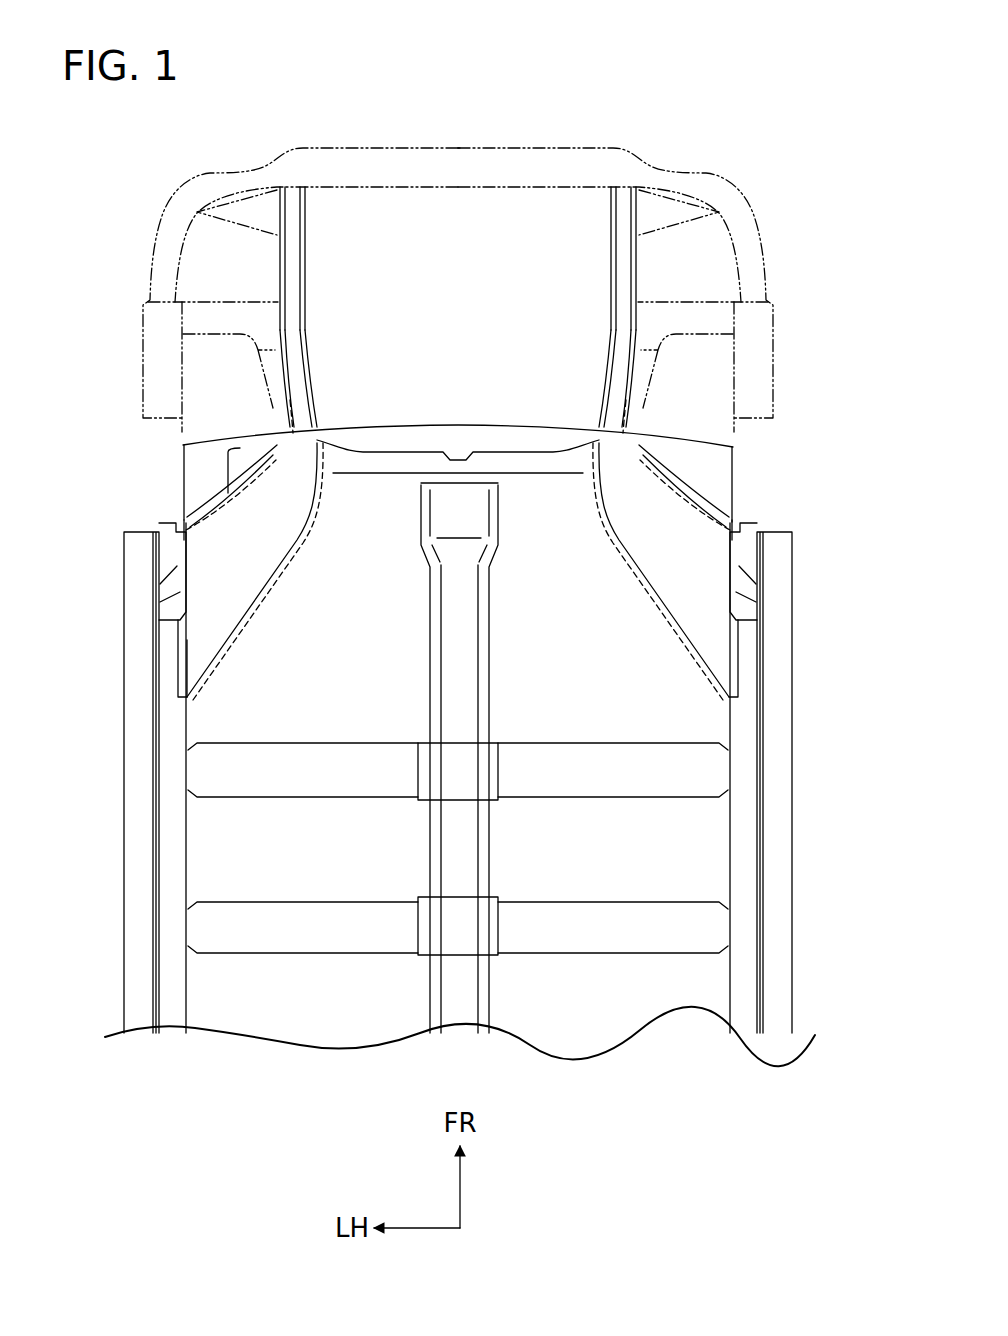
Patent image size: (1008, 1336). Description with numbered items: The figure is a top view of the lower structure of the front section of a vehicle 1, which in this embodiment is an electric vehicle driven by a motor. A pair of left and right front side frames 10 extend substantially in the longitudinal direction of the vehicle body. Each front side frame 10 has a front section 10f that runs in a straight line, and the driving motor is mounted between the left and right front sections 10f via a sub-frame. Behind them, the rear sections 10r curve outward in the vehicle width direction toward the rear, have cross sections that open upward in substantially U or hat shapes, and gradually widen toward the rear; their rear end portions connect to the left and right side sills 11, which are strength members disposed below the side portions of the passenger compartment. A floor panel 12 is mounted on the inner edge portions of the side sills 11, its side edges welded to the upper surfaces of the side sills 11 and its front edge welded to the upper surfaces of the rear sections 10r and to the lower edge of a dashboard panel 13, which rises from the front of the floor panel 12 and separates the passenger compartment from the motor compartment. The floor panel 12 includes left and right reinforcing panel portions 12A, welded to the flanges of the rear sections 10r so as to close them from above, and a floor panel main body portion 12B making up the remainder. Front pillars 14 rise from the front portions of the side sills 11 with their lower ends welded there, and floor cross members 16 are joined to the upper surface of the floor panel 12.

The vehicle 1 is at (754, 121).
The front side frame 10 is at (458, 250).
The front section of front side frame 10f is at (312, 275).
The rear section of front side frame 10r is at (207, 500).
The side sill 11 is at (132, 695).
The floor panel 12 is at (722, 721).
The reinforcing panel portion 12A is at (220, 567).
The floor panel main body portion 12B is at (222, 710).
The dashboard panel 13 is at (688, 432).
The front pillar 14 is at (173, 595).
The floor cross member 16 is at (650, 785).